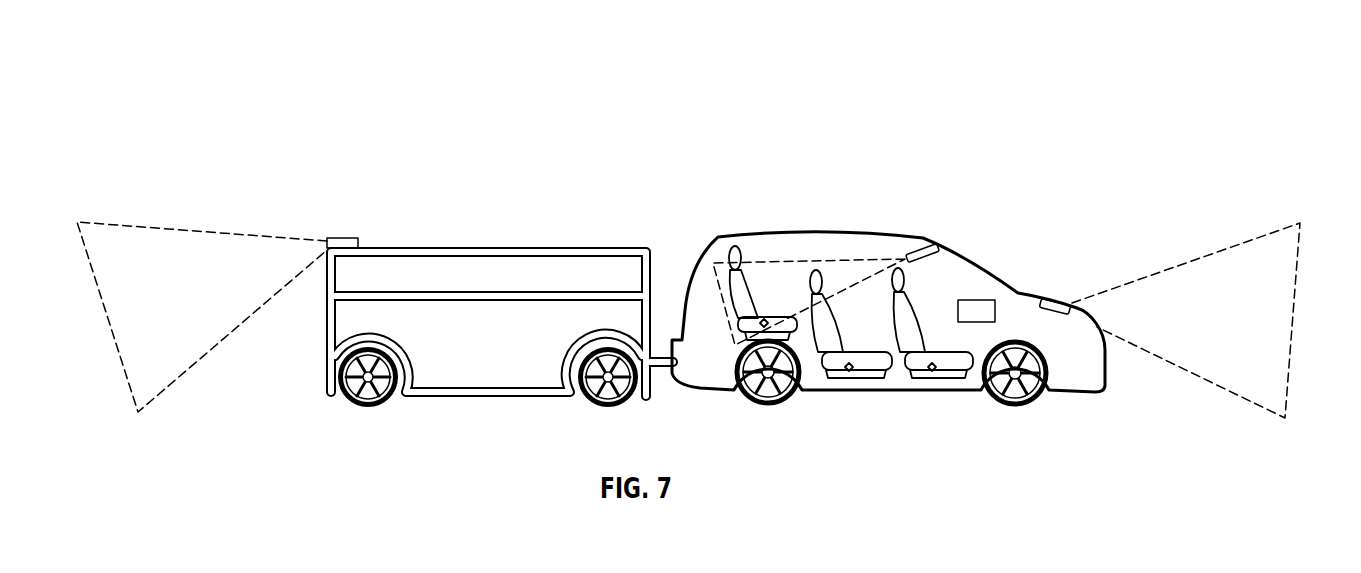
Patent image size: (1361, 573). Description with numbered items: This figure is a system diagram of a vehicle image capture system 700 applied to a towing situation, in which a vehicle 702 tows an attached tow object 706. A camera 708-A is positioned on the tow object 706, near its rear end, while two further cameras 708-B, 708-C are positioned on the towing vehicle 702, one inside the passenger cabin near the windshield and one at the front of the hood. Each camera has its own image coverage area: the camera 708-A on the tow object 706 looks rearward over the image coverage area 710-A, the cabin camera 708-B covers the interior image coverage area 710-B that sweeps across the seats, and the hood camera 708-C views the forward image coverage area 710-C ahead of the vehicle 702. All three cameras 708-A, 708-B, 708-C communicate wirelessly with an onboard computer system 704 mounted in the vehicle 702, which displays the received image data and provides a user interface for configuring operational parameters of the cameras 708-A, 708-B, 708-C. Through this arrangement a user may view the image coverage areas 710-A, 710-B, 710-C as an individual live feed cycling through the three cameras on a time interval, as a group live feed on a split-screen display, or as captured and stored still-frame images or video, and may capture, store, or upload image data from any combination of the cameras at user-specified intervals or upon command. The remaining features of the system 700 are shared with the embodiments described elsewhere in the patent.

The vehicle image capture system 700 is at (1290, 48).
The vehicle 702 is at (785, 232).
The onboard computer system 704 is at (983, 300).
The tow object 706 is at (567, 247).
The camera 708-A is at (345, 238).
The camera 708-B is at (932, 243).
The camera 708-C is at (1058, 300).
The image coverage area 710-A is at (175, 228).
The image coverage area 710-B is at (753, 257).
The image coverage area 710-C is at (1178, 268).